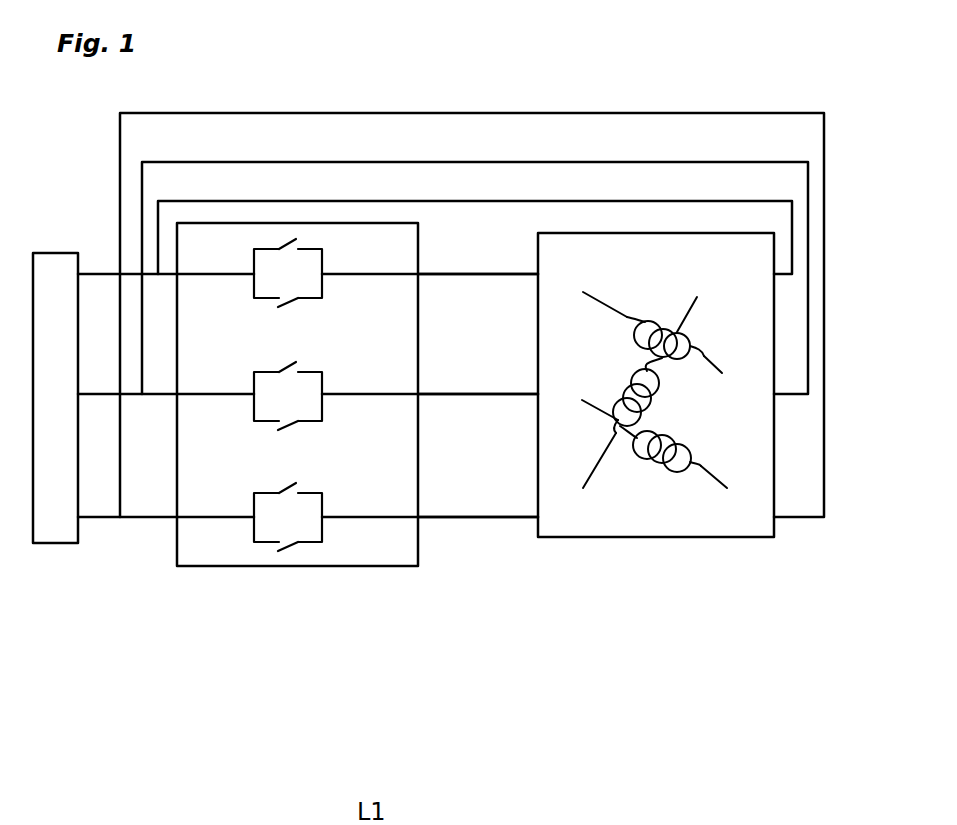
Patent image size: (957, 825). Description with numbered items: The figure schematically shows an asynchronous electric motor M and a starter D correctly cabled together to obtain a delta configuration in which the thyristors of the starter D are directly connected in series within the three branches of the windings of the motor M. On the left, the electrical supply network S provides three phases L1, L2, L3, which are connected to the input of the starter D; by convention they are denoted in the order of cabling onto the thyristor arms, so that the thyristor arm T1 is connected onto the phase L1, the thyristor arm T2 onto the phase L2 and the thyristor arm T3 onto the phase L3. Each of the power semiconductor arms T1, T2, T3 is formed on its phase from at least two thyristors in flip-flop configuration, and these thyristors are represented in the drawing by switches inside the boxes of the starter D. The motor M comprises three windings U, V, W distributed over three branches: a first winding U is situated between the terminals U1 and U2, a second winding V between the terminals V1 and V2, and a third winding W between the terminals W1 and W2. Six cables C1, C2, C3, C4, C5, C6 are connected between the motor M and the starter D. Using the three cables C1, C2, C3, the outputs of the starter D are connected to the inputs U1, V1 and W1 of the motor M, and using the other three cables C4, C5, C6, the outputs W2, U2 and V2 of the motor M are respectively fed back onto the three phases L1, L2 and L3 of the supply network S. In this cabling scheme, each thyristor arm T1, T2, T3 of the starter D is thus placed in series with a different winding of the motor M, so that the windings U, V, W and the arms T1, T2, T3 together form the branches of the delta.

The electrical supply network S is at (55, 398).
The phase L1 is at (308, 265).
The phase L2 is at (308, 386).
The phase L3 is at (308, 508).
The starter D is at (283, 566).
The thyristor arm T1 is at (288, 273).
The thyristor arm T2 is at (288, 396).
The thyristor arm T3 is at (288, 517).
The cable C1 is at (450, 273).
The cable C2 is at (445, 394).
The cable C3 is at (445, 516).
The cable C4 is at (552, 200).
The cable C5 is at (655, 161).
The cable C6 is at (573, 112).
The asynchronous electric motor M is at (697, 537).
The first winding U is at (665, 326).
The second winding V is at (667, 448).
The third winding W is at (630, 403).
The input terminal U1 is at (589, 291).
The output terminal U2 is at (731, 379).
The input terminal V1 is at (587, 404).
The output terminal V2 is at (729, 494).
The input terminal W1 is at (589, 477).
The output terminal W2 is at (714, 299).